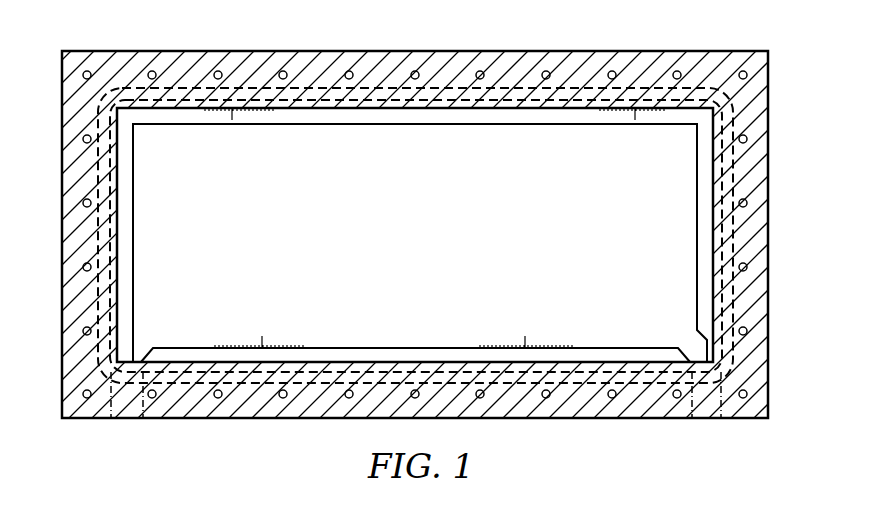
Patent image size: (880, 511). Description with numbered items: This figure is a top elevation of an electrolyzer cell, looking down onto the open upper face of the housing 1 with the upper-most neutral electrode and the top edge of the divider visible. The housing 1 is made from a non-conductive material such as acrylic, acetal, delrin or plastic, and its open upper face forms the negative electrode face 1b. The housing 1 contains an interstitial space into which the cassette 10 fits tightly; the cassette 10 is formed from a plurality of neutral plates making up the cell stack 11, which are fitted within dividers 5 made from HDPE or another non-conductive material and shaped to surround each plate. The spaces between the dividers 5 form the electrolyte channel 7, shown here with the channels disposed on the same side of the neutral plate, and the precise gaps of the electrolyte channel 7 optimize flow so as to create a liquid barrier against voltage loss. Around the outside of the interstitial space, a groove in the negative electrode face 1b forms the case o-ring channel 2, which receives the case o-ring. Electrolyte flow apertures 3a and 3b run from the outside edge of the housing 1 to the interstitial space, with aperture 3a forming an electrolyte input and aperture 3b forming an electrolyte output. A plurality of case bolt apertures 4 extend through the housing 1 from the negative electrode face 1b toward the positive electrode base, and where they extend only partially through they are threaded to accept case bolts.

The housing 1 is at (696, 34).
The negative electrode face 1b is at (493, 58).
The case o-ring channel 2 is at (133, 100).
The electrolyte flow aperture 3a is at (703, 406).
The electrolyte flow aperture 3b is at (121, 405).
The case bolt apertures 4 is at (286, 398).
The dividers 5 is at (703, 216).
The electrolyte channel 7 is at (98, 354).
The cassette 10 is at (702, 142).
The cell stack 11 is at (680, 172).